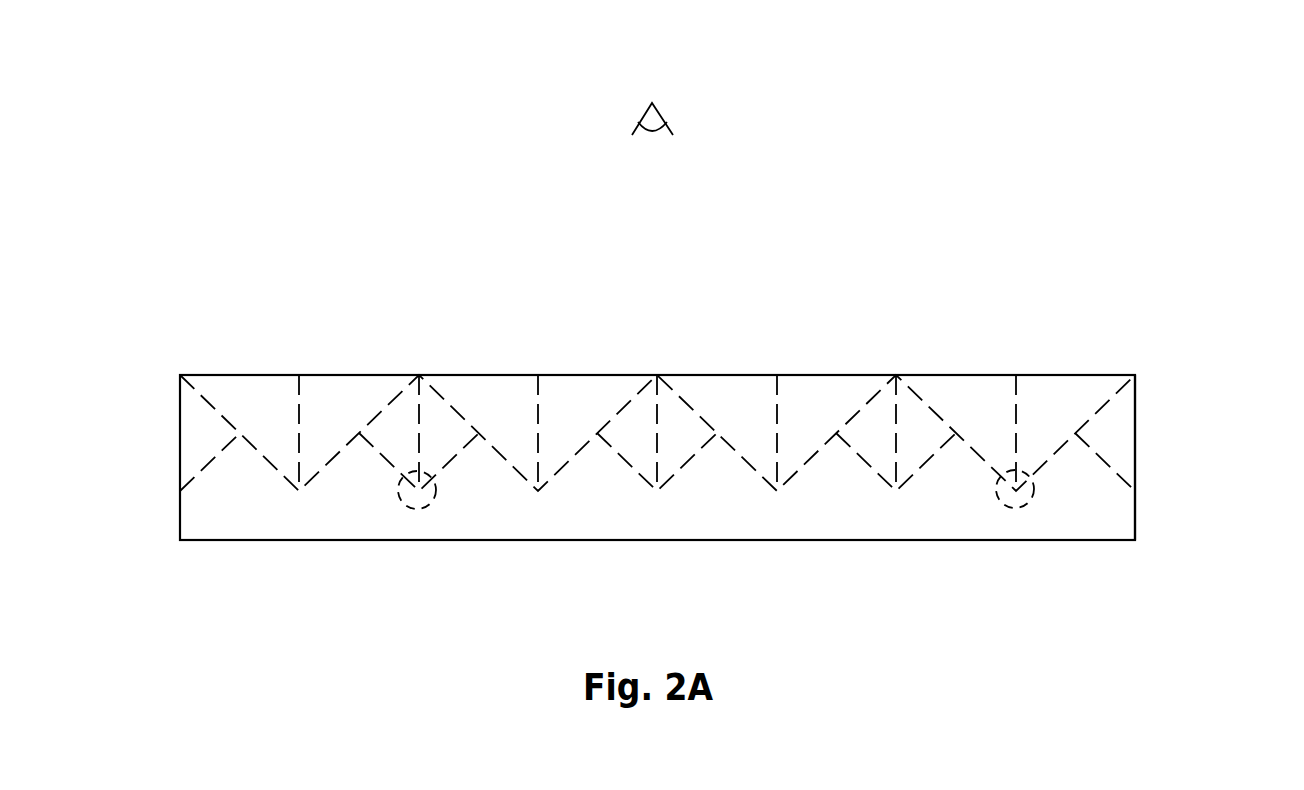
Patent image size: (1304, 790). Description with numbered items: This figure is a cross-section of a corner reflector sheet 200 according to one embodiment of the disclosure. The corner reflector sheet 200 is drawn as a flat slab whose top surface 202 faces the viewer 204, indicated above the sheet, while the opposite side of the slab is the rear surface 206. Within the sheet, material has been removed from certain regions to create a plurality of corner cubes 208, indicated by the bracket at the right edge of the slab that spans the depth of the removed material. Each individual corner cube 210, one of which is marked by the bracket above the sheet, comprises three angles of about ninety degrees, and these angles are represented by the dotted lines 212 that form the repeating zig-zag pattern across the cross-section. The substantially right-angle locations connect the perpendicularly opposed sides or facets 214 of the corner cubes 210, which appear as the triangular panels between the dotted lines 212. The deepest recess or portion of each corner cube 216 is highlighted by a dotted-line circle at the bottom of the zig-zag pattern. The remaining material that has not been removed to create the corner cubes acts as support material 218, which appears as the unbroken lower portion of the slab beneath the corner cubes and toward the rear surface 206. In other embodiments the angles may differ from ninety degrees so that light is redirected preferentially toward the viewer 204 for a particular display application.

The corner reflector sheet 200 is at (1049, 340).
The top surface 202 is at (240, 375).
The viewer 204 is at (668, 120).
The rear surface 206 is at (863, 540).
The plurality of corner cubes 208 is at (1142, 375).
The individual corner cube 210 is at (897, 357).
The dotted lines 212 is at (300, 432).
The facets 214 is at (970, 410).
The deepest recess of corner cube 216 is at (420, 492).
The support material 218 is at (270, 523).